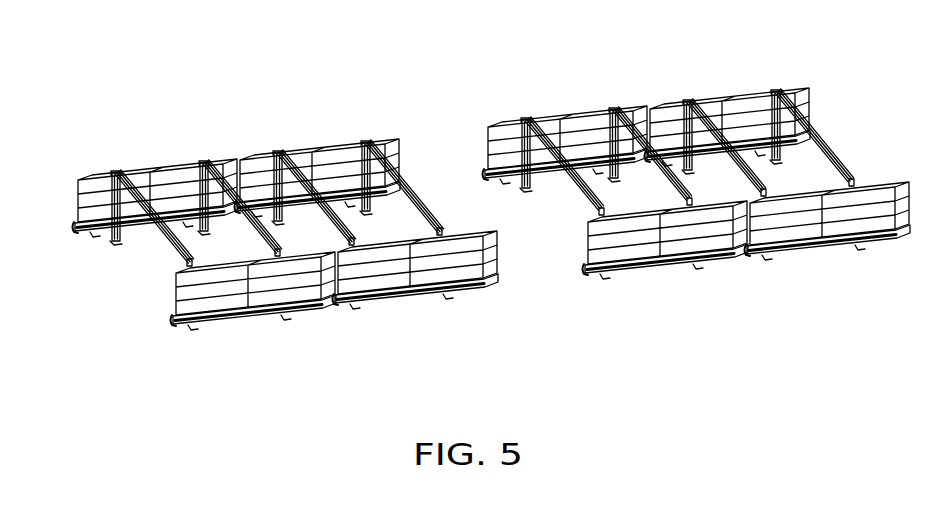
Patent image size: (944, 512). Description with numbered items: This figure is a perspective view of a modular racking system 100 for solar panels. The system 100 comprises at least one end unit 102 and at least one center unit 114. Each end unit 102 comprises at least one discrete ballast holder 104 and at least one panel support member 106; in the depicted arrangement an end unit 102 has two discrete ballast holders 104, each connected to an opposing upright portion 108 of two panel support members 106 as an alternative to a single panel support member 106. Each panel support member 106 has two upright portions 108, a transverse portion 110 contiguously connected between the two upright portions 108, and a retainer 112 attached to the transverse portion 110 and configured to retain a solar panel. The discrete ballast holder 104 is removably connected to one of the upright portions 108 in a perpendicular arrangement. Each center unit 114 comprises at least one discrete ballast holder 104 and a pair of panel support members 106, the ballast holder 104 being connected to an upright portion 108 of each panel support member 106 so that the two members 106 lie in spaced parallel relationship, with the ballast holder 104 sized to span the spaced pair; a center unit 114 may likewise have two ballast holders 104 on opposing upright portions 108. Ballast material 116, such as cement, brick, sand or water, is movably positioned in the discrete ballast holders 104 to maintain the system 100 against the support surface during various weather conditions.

The modular racking system 100 is at (375, 62).
The end unit 102 is at (121, 276).
The discrete ballast holder 104 is at (263, 300).
The panel support member 106 is at (405, 183).
The upright portion 108 is at (108, 211).
The transverse portion 110 is at (432, 208).
The retainer 112 is at (533, 124).
The center unit 114 is at (683, 292).
The ballast material 116 is at (440, 260).